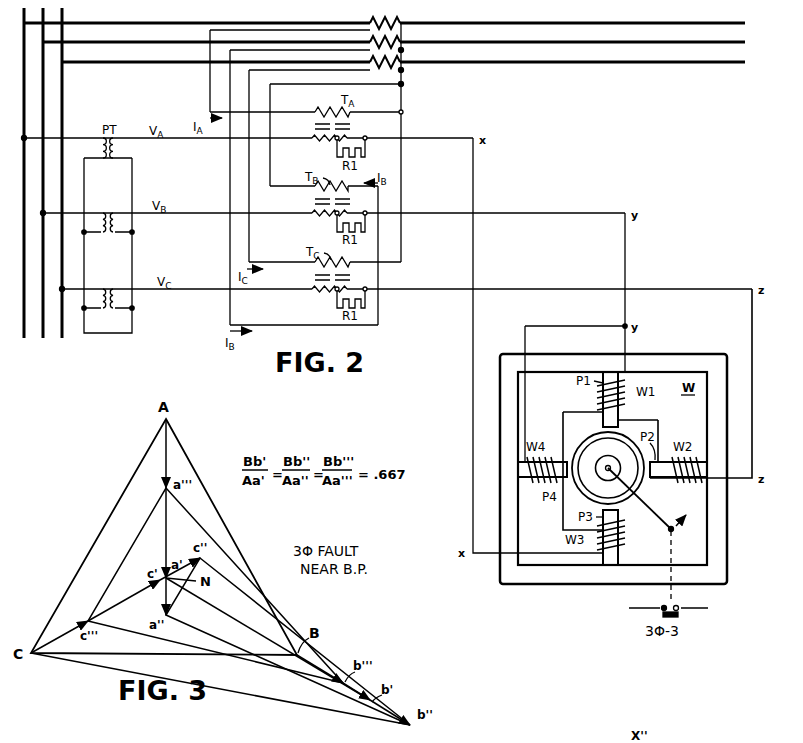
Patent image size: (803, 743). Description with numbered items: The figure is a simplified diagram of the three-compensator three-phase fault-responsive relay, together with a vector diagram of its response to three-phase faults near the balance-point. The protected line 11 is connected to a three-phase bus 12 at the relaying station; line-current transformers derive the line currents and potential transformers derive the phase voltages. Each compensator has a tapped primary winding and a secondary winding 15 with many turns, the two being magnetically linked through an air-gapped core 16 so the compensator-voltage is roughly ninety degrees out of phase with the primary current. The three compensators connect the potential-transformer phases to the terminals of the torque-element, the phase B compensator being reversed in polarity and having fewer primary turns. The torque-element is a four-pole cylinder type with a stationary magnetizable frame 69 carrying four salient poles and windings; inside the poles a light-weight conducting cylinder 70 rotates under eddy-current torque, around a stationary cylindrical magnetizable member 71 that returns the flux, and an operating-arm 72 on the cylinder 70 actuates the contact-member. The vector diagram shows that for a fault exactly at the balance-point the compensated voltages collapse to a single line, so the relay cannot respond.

The protected line 11 is at (603, 21).
The three-phase bus 12 is at (64, 19).
The secondary winding 15 is at (328, 143).
The air-gapped core 16 is at (356, 278).
The stationary magnetizable frame 69 is at (677, 357).
The cylinder 70 is at (645, 479).
The stationary cylindrical magnetizable member 71 is at (597, 450).
The operating-arm 72 is at (666, 528).